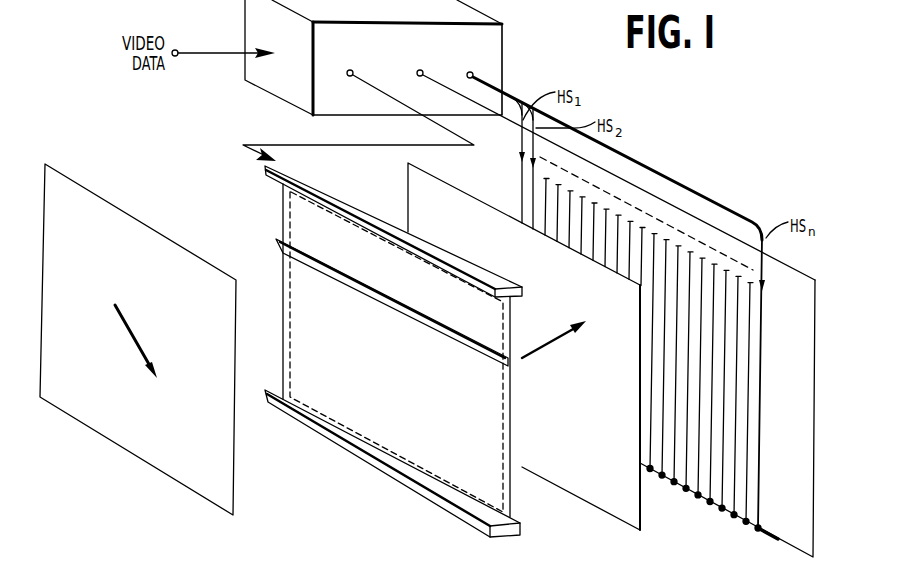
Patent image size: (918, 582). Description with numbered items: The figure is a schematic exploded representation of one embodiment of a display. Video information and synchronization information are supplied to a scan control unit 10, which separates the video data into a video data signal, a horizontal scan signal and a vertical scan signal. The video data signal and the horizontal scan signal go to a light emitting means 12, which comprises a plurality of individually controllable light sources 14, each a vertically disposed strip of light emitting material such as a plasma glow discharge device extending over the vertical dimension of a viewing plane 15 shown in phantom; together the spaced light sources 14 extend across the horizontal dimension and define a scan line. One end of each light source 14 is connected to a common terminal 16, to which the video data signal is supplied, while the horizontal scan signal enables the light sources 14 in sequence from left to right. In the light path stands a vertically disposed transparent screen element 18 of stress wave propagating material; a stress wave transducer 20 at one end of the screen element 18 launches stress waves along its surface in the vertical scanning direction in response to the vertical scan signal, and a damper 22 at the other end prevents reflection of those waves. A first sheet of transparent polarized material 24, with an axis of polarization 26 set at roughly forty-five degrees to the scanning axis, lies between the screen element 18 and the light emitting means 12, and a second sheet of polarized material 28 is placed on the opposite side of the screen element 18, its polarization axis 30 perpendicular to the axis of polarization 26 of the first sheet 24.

The scan control unit 10 is at (503, 55).
The light emitting means 12 is at (765, 447).
The individually controllable light sources 14 is at (522, 186).
The viewing plane 15 is at (283, 270).
The common terminal 16 is at (748, 536).
The transparent screen element 18 is at (283, 207).
The stress wave transducer 20 is at (333, 193).
The damper 22 is at (365, 458).
The first sheet of transparent polarized material 24 is at (639, 512).
The axis of polarization 26 is at (552, 343).
The second sheet of transparent polarized material 28 is at (162, 468).
The polarization axis 30 is at (138, 340).